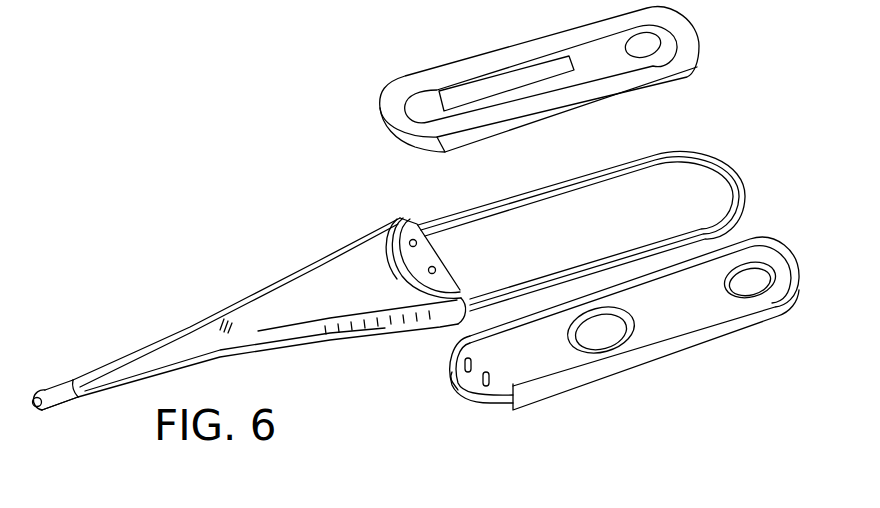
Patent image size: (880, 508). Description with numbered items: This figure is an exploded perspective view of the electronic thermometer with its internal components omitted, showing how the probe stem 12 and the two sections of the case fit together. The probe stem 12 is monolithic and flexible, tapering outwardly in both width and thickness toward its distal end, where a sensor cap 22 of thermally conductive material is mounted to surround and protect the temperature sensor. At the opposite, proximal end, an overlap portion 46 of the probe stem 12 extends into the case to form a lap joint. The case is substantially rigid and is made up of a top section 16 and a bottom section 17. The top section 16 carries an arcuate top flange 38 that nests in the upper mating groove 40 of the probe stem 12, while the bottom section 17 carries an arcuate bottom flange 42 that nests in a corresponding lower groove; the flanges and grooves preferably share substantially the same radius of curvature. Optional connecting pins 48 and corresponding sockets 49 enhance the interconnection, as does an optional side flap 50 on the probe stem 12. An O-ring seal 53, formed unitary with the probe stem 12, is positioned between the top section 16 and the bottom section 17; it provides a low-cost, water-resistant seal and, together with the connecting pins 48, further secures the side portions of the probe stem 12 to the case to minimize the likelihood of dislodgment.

The probe stem 12 is at (247, 316).
The top section 16 is at (681, 28).
The bottom section 17 is at (715, 330).
The sensor cap 22 is at (57, 383).
The top flange 38 is at (397, 137).
The upper mating groove 40 is at (400, 217).
The bottom flange 42 is at (447, 386).
The overlap portion 46 is at (441, 255).
The connecting pins 48 is at (483, 405).
The sockets 49 is at (396, 222).
The side flap 50 is at (414, 240).
The O-ring seal 53 is at (737, 180).